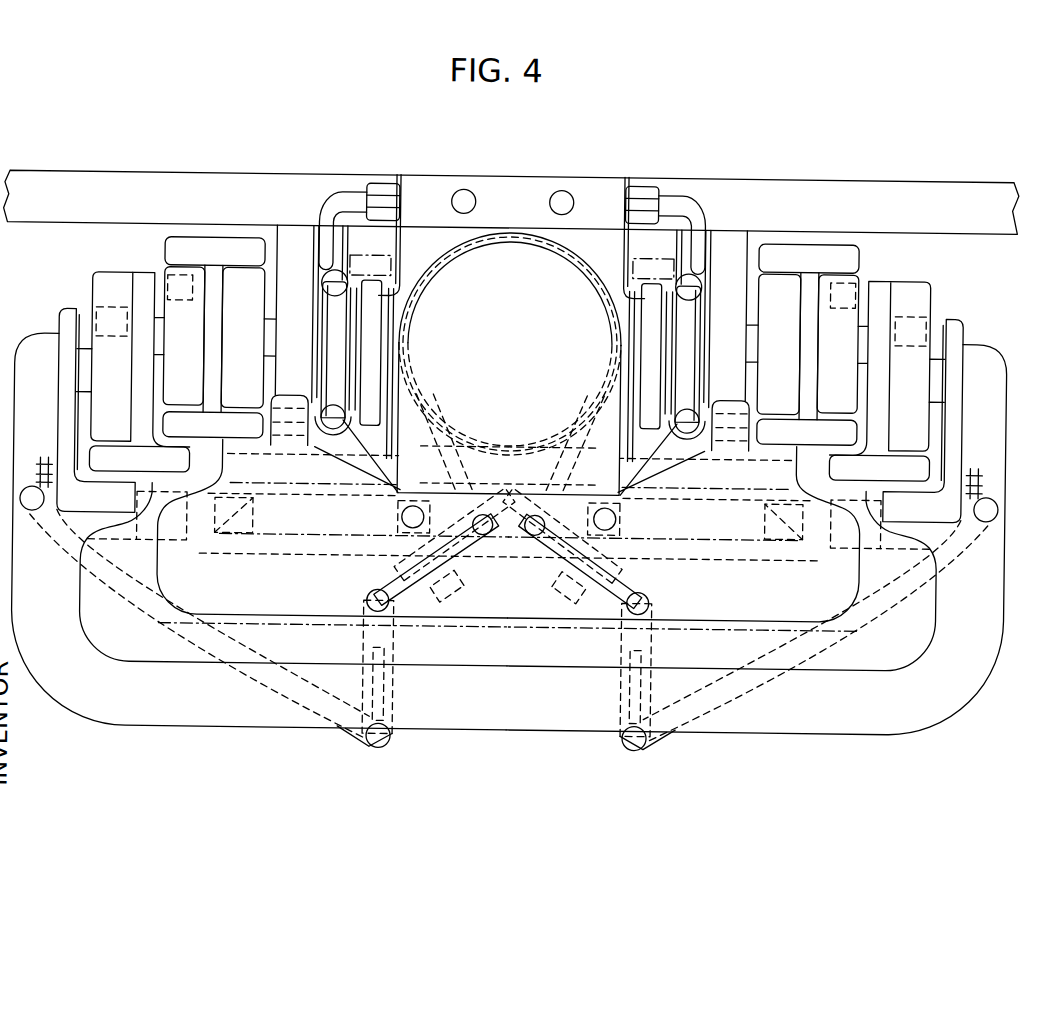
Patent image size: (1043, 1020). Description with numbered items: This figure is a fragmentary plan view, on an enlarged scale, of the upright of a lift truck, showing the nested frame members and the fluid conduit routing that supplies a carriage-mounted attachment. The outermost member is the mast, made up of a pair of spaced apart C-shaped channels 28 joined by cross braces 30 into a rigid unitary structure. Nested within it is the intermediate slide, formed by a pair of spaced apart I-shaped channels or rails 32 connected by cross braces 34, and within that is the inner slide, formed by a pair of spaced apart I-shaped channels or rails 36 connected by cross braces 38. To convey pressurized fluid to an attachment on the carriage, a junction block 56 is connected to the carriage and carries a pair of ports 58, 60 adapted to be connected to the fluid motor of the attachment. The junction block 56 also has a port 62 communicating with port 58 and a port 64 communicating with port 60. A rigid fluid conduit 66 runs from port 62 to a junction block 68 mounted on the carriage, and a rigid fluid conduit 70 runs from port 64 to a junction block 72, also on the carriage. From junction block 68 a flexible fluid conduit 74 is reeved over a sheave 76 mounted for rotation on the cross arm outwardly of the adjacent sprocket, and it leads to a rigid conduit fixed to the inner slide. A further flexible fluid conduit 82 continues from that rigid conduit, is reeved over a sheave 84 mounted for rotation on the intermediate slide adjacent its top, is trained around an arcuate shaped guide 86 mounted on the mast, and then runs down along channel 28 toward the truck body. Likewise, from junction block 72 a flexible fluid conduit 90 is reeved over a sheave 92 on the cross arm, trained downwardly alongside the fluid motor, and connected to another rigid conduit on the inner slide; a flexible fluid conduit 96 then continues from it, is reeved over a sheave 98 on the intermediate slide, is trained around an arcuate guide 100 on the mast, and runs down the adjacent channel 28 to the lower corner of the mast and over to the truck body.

The C-shaped channel 28 is at (944, 335).
The cross brace 30 is at (766, 719).
The I-shaped channel or rail 32 is at (907, 295).
The cross brace 34 is at (525, 650).
The I-shaped channel or rail 36 is at (836, 253).
The cross brace 38 is at (484, 600).
The junction block 56 is at (504, 198).
The port 58 is at (456, 193).
The port 60 is at (559, 192).
The port 62 is at (399, 192).
The port 64 is at (621, 191).
The rigid fluid conduit 66 is at (339, 204).
The junction block 68 is at (303, 296).
The rigid fluid conduit 70 is at (671, 196).
The junction block 72 is at (708, 305).
The flexible fluid conduit 74 is at (335, 342).
The sheave 76 is at (366, 342).
The flexible fluid conduit 82 is at (361, 740).
The sheave 84 is at (383, 574).
The arcuate shaped guide 86 is at (403, 714).
The flexible fluid conduit 90 is at (685, 345).
The sheave 92 is at (638, 333).
The flexible fluid conduit 96 is at (660, 737).
The sheave 98 is at (637, 580).
The arcuate guide 100 is at (623, 712).